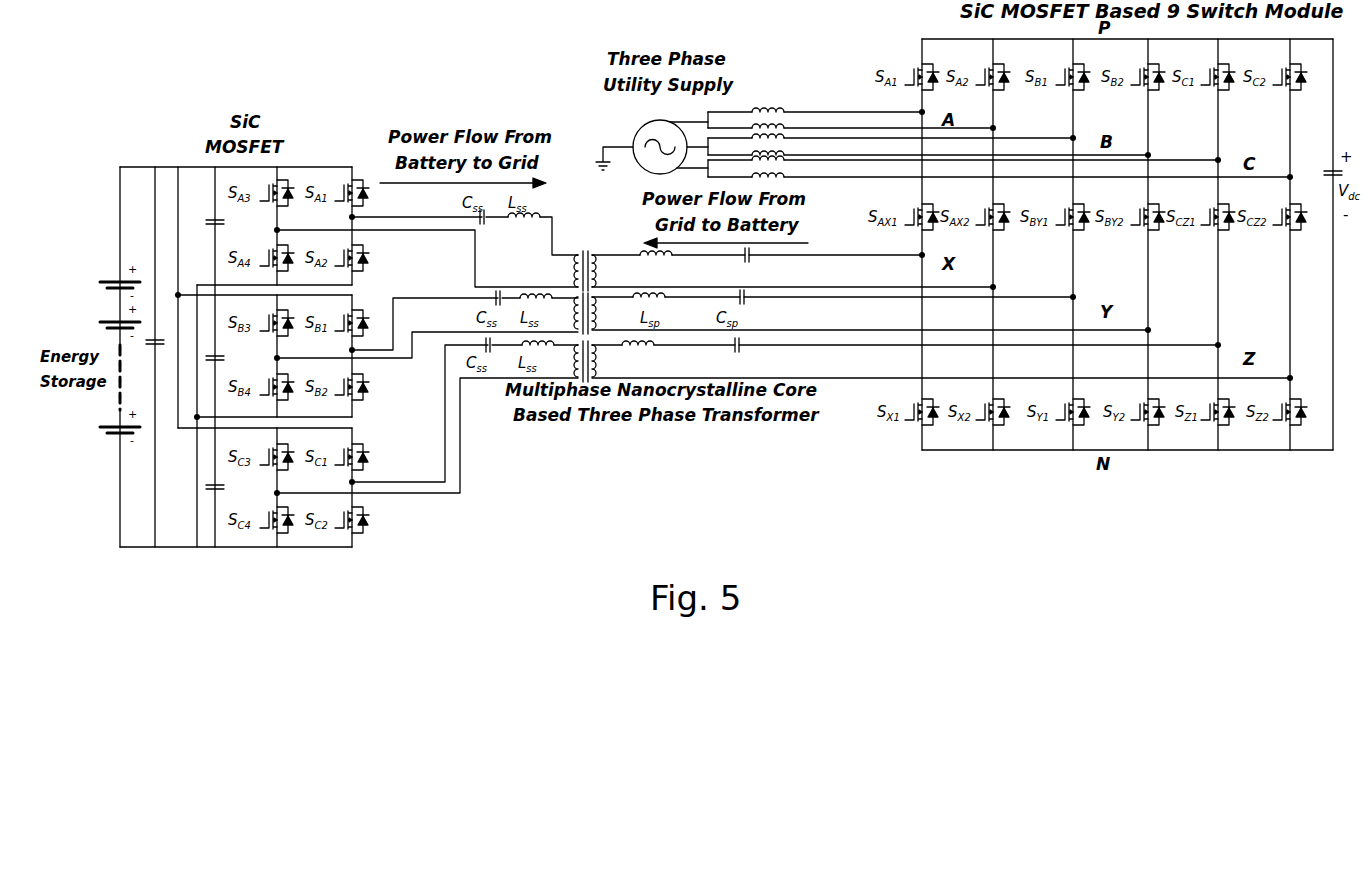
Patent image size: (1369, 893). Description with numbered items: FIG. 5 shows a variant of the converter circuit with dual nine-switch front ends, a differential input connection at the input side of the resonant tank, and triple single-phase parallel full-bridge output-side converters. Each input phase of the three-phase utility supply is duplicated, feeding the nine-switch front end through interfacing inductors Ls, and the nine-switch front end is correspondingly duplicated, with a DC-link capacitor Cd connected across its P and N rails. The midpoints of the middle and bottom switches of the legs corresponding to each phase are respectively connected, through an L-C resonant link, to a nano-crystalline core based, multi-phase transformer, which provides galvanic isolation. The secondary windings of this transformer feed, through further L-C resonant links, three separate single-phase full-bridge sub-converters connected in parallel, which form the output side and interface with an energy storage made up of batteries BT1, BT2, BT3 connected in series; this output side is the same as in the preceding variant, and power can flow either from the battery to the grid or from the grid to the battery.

The battery 1 BT1 is at (99, 282).
The battery 2 BT2 is at (99, 322).
The battery 3 BT3 is at (99, 427).
The supply inductors Ls is at (999, 131).
The dc-link capacitor Cd is at (1324, 244).